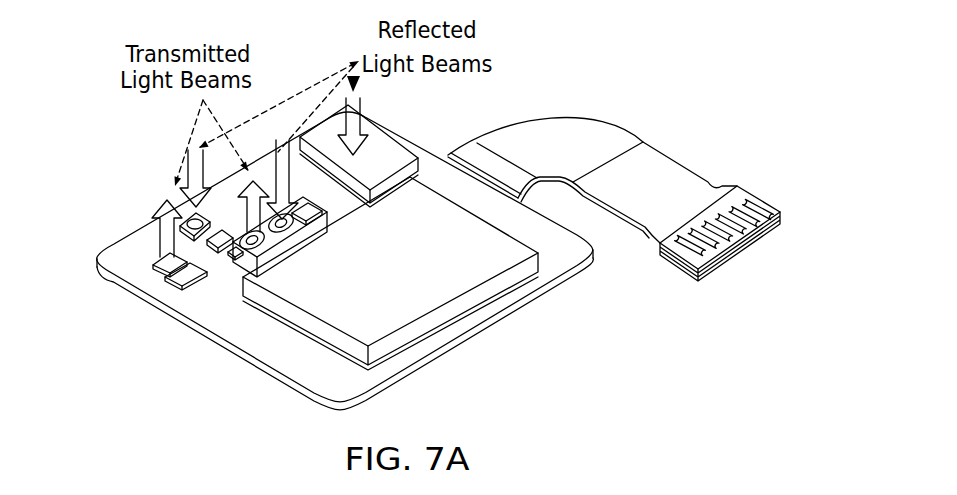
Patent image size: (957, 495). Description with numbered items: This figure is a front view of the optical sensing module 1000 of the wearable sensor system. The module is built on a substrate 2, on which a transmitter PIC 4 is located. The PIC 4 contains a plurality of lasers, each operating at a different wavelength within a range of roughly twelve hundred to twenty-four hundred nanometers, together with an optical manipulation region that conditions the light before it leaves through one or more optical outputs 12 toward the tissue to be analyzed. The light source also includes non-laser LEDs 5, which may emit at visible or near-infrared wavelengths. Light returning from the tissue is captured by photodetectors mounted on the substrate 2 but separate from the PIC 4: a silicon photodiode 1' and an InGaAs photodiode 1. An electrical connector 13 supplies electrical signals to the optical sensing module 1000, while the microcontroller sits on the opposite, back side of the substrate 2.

The InGaAs photodiode 1 is at (171, 172).
The silicon photodiode 1' is at (357, 106).
The substrate 2 is at (209, 318).
The transmitter PIC 4 is at (406, 277).
The LEDs 5 is at (303, 195).
The optical outputs 12 is at (162, 224).
The electrical connector 13 is at (728, 245).
The optical sensing module 1000 is at (694, 92).